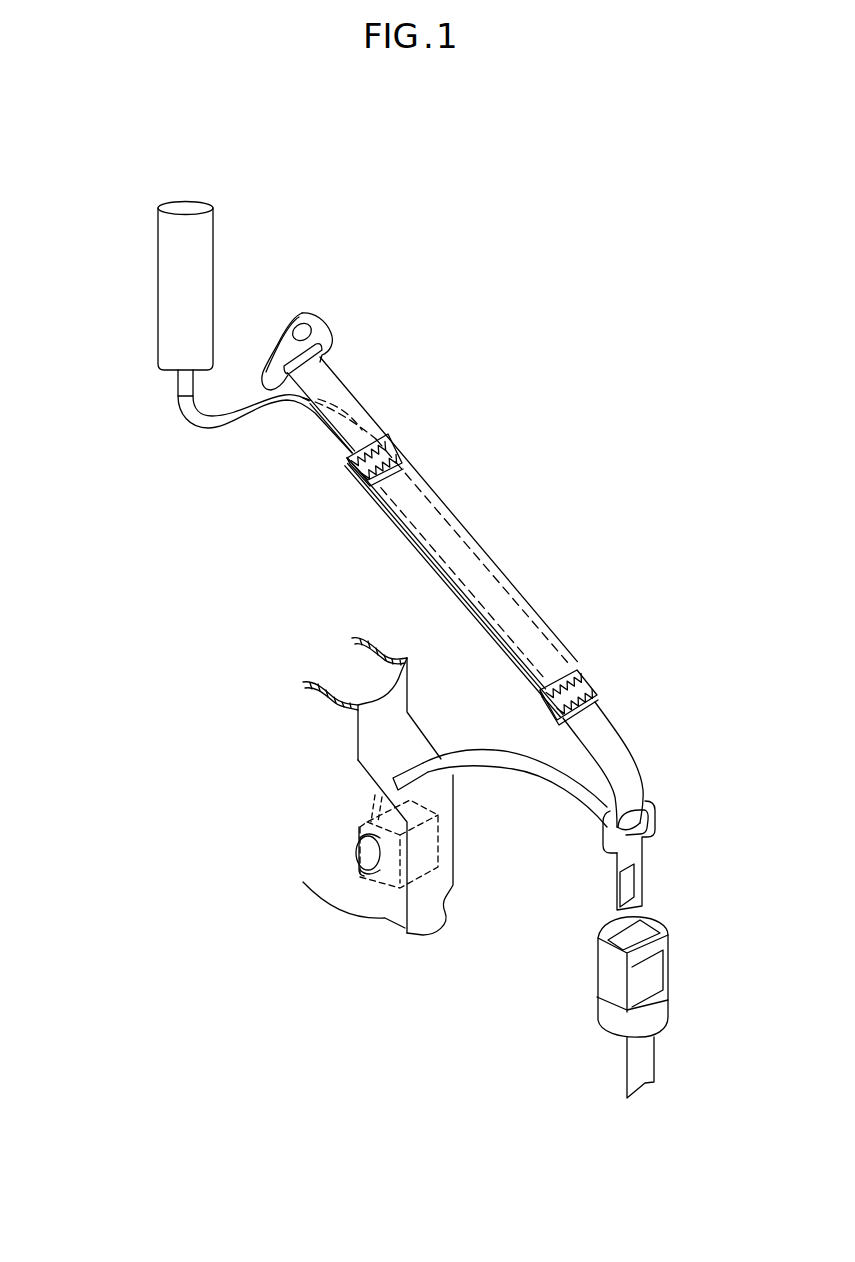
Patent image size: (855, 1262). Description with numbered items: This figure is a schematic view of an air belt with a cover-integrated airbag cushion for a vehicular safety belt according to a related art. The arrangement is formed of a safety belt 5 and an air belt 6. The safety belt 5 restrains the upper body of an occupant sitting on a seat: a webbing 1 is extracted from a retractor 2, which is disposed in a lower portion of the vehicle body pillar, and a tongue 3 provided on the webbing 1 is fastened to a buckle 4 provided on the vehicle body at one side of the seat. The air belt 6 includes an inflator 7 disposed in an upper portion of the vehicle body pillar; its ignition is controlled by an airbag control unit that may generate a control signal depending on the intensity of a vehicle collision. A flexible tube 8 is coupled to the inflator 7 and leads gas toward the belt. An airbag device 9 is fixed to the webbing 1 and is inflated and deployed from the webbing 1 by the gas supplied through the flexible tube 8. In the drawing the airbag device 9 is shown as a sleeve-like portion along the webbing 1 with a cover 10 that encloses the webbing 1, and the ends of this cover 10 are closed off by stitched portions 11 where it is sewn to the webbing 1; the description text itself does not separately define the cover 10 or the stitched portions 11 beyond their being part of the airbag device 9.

The webbing 1 is at (330, 388).
The retractor 2 is at (380, 878).
The tongue 3 is at (637, 851).
The buckle 4 is at (653, 1018).
The safety belt 5 is at (532, 877).
The air belt 6 is at (270, 465).
The inflator 7 is at (175, 302).
The flexible tube 8 is at (200, 420).
The airbag device 9 is at (610, 486).
The cover 10 is at (480, 537).
The sewn portion 11 is at (569, 674).